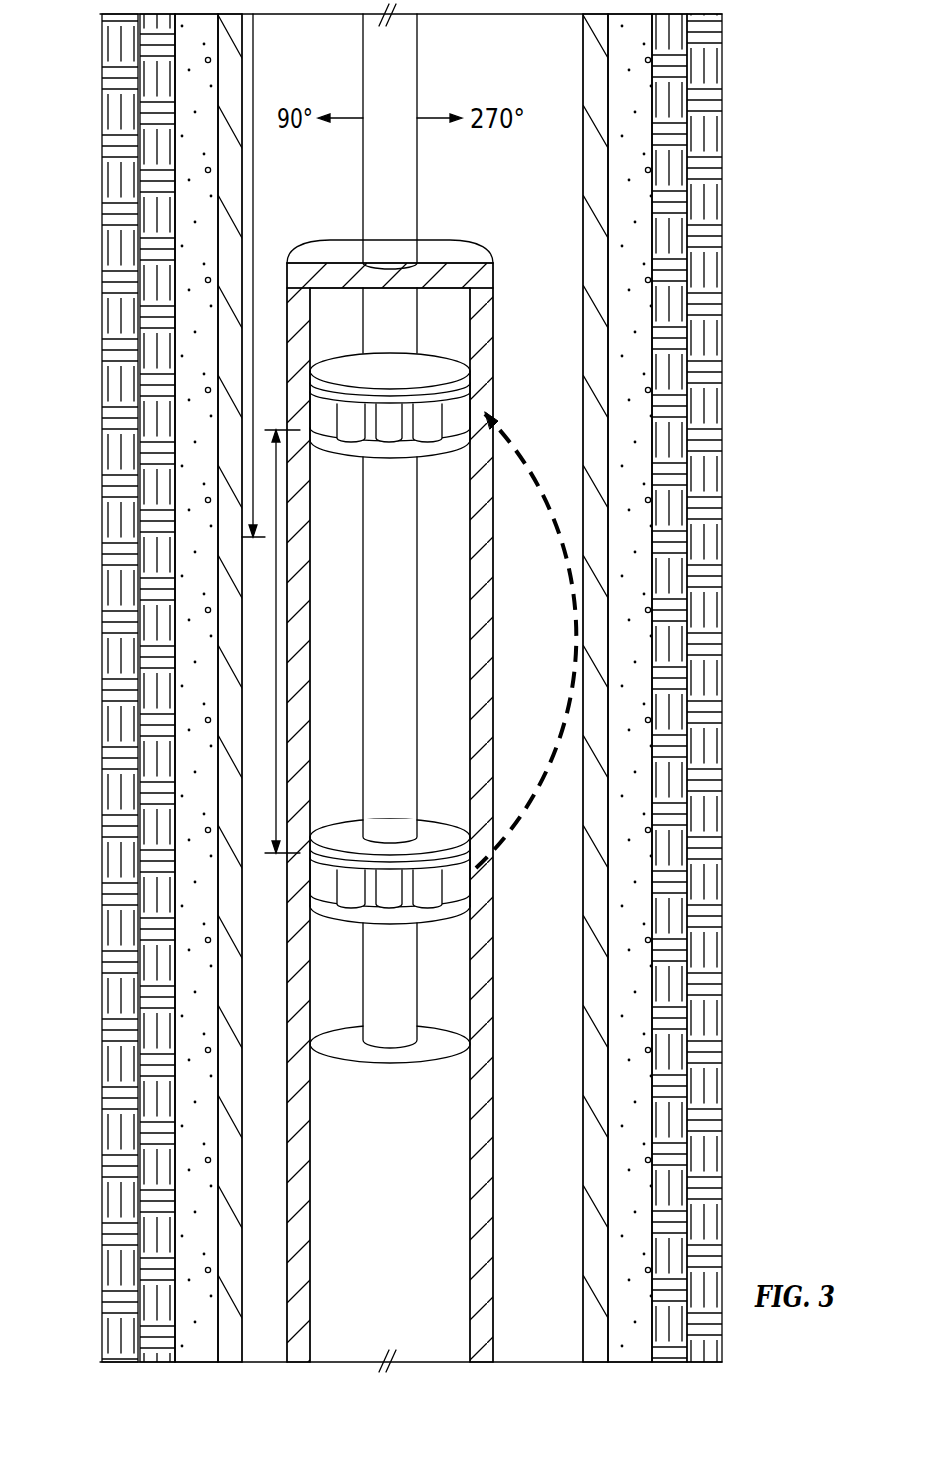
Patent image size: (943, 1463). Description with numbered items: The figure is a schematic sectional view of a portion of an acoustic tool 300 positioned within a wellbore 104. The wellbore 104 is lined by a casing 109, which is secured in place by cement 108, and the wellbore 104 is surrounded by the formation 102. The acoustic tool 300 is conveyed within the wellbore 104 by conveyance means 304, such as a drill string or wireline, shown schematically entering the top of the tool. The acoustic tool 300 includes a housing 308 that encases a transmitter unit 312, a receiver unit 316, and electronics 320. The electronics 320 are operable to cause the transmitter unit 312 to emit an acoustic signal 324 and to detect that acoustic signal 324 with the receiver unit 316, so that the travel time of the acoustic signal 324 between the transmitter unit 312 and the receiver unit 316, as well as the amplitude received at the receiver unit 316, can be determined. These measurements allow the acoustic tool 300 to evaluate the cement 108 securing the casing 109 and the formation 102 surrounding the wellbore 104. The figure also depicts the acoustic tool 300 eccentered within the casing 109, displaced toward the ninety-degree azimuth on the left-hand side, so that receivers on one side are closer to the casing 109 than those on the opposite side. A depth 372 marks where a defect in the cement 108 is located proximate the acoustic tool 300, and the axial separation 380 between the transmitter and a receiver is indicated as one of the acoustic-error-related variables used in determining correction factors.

The formation 102 is at (708, 140).
The wellbore 104 is at (558, 1326).
The cement 108 is at (612, 50).
The casing 109 is at (596, 82).
The acoustic tool 300 is at (480, 205).
The conveyance means 304 is at (410, 78).
The housing 308 is at (485, 1137).
The transmitter unit 312 is at (450, 928).
The receiver unit 316 is at (453, 352).
The electronics 320 is at (458, 1224).
The acoustic signal 324 is at (527, 833).
The depth 372 is at (258, 402).
The axial separation 380 is at (276, 813).